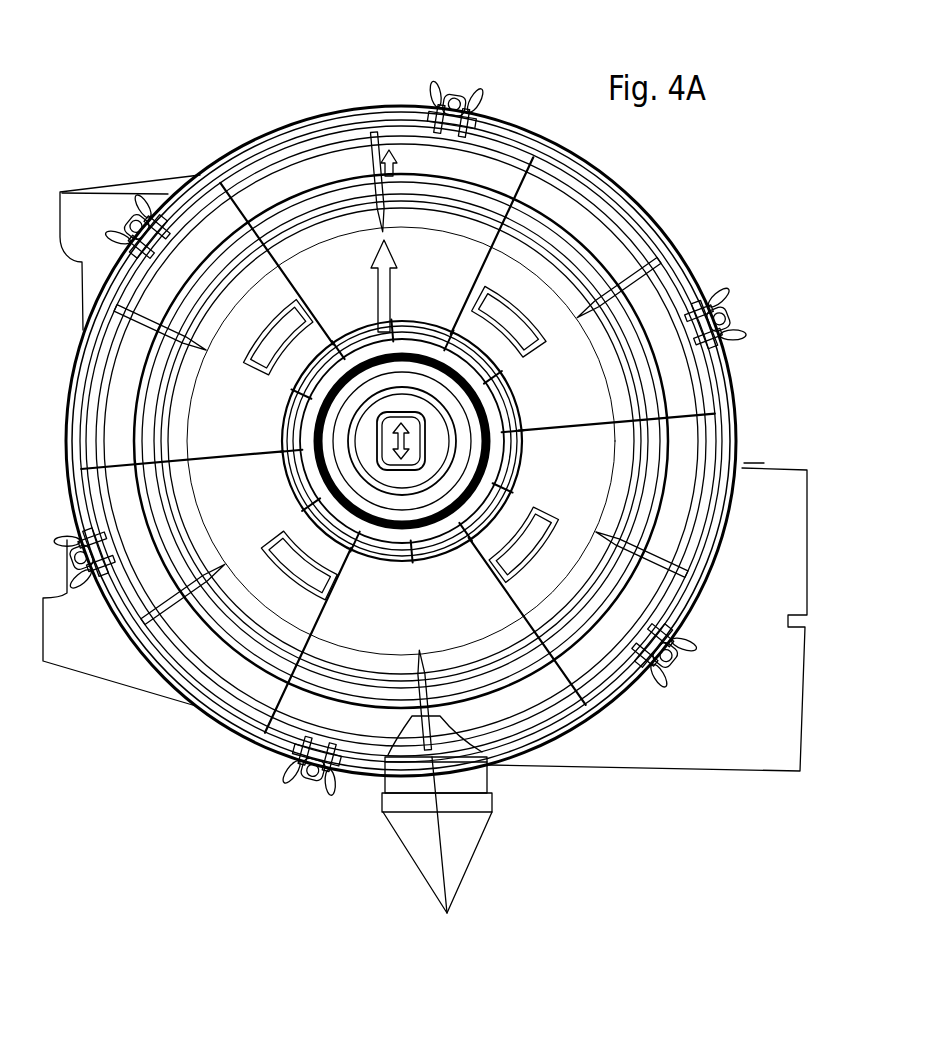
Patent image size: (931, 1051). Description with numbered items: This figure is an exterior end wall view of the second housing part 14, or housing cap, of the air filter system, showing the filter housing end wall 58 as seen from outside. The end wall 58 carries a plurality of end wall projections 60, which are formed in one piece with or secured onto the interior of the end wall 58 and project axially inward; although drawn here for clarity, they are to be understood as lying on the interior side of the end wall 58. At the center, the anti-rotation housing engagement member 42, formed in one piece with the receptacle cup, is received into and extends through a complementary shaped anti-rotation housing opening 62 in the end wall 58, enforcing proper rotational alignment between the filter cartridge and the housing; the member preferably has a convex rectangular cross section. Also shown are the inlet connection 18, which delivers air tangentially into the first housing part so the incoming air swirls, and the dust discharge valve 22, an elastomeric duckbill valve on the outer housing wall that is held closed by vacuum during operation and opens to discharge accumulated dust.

The second housing part 14 is at (528, 122).
The inlet connection 18 is at (718, 771).
The dust discharge valve 22 is at (493, 818).
The anti-rotation housing engagement member 42 is at (421, 435).
The end wall 58 is at (350, 271).
The end wall projections 60 is at (263, 317).
The anti-rotation housing opening 62 is at (380, 441).